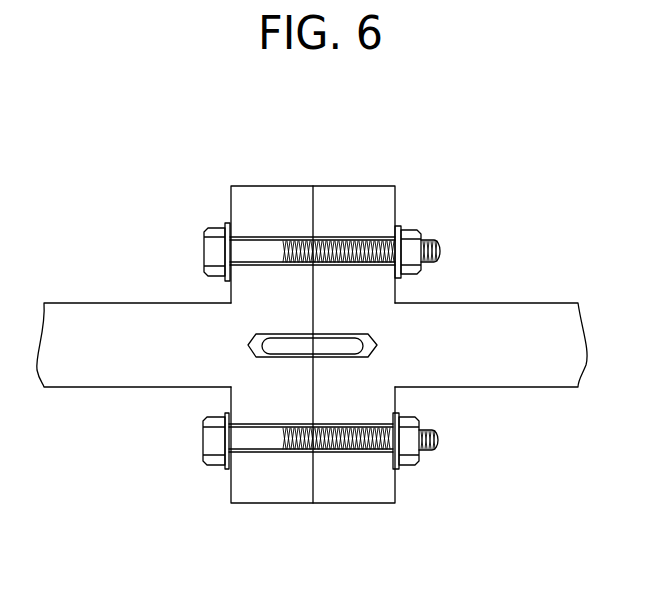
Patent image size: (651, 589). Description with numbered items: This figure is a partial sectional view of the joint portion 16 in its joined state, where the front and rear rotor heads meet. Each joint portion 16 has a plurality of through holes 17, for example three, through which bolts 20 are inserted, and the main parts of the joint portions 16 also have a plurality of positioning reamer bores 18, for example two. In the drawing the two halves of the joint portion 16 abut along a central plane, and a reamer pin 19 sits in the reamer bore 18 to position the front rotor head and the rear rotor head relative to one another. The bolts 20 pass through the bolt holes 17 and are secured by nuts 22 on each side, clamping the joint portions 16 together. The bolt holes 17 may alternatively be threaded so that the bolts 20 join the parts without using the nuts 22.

The joint portion 16 is at (272, 186).
The through hole 17 is at (332, 239).
The positioning reamer bore 18 is at (249, 342).
The reamer pin 19 is at (291, 347).
The bolt 20 is at (210, 228).
The nut 22 is at (412, 226).